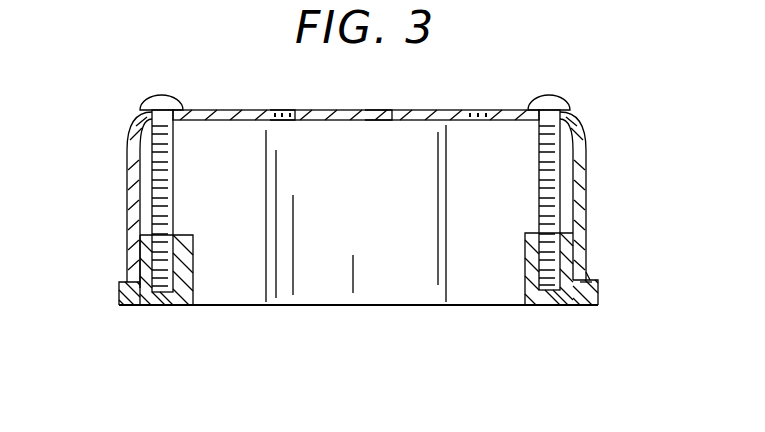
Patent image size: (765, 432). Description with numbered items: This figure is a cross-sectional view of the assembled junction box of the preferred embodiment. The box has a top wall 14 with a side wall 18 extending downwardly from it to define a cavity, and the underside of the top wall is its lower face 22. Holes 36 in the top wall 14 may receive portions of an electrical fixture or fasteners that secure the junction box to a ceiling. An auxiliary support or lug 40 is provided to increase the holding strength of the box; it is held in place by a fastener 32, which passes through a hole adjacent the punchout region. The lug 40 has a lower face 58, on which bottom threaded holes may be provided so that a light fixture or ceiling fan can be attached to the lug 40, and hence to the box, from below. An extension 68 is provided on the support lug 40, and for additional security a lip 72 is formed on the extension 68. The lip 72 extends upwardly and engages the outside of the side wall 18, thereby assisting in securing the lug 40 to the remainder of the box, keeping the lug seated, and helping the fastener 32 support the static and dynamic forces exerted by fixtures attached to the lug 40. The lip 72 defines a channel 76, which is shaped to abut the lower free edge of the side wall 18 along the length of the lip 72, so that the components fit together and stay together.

The top wall 14 is at (435, 110).
The side wall 18 is at (128, 208).
The lower face 22 is at (293, 122).
The additional holes 36 is at (375, 110).
The fastener 32 is at (160, 96).
The lower face 58 is at (174, 307).
The extension 68 is at (138, 306).
The auxiliary support lug 40 is at (530, 312).
The lip 72 is at (590, 276).
The channel 76 is at (586, 278).